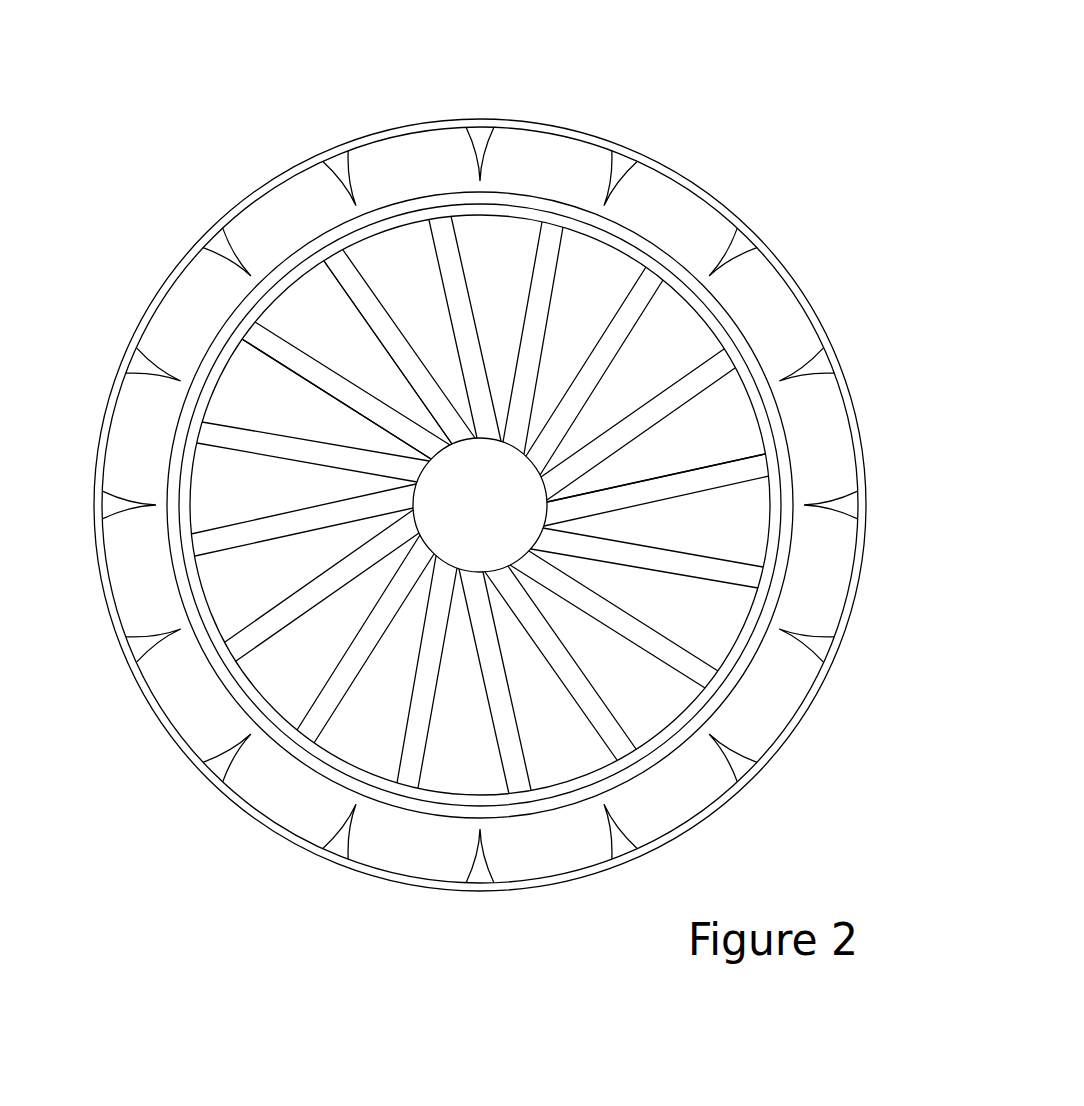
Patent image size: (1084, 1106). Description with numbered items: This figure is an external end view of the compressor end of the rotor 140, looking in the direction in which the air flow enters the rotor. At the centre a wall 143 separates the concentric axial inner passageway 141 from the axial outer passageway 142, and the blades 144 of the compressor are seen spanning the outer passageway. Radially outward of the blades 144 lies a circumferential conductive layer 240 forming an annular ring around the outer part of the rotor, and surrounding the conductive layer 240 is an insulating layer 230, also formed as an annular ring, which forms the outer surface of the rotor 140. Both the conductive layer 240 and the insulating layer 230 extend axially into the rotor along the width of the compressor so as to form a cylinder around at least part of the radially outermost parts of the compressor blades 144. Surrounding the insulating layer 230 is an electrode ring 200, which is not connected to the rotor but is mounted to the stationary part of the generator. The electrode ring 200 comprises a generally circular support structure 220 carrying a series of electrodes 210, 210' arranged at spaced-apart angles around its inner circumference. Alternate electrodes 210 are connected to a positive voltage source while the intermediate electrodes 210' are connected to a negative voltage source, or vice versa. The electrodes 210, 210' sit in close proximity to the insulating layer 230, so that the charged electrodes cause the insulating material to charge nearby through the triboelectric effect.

The rotor 140 is at (499, 473).
The axial inner passageway 141 is at (458, 522).
The axial outer passageway 142 is at (297, 650).
The wall 143 is at (557, 521).
The compressor blades 144 is at (350, 287).
The electrode ring 200 is at (520, 448).
The electrodes 210 is at (479, 452).
The intermediate electrodes 210' is at (536, 457).
The support structure 220 is at (667, 173).
The insulating layer 230 is at (724, 322).
The conductive layer 240 is at (770, 432).